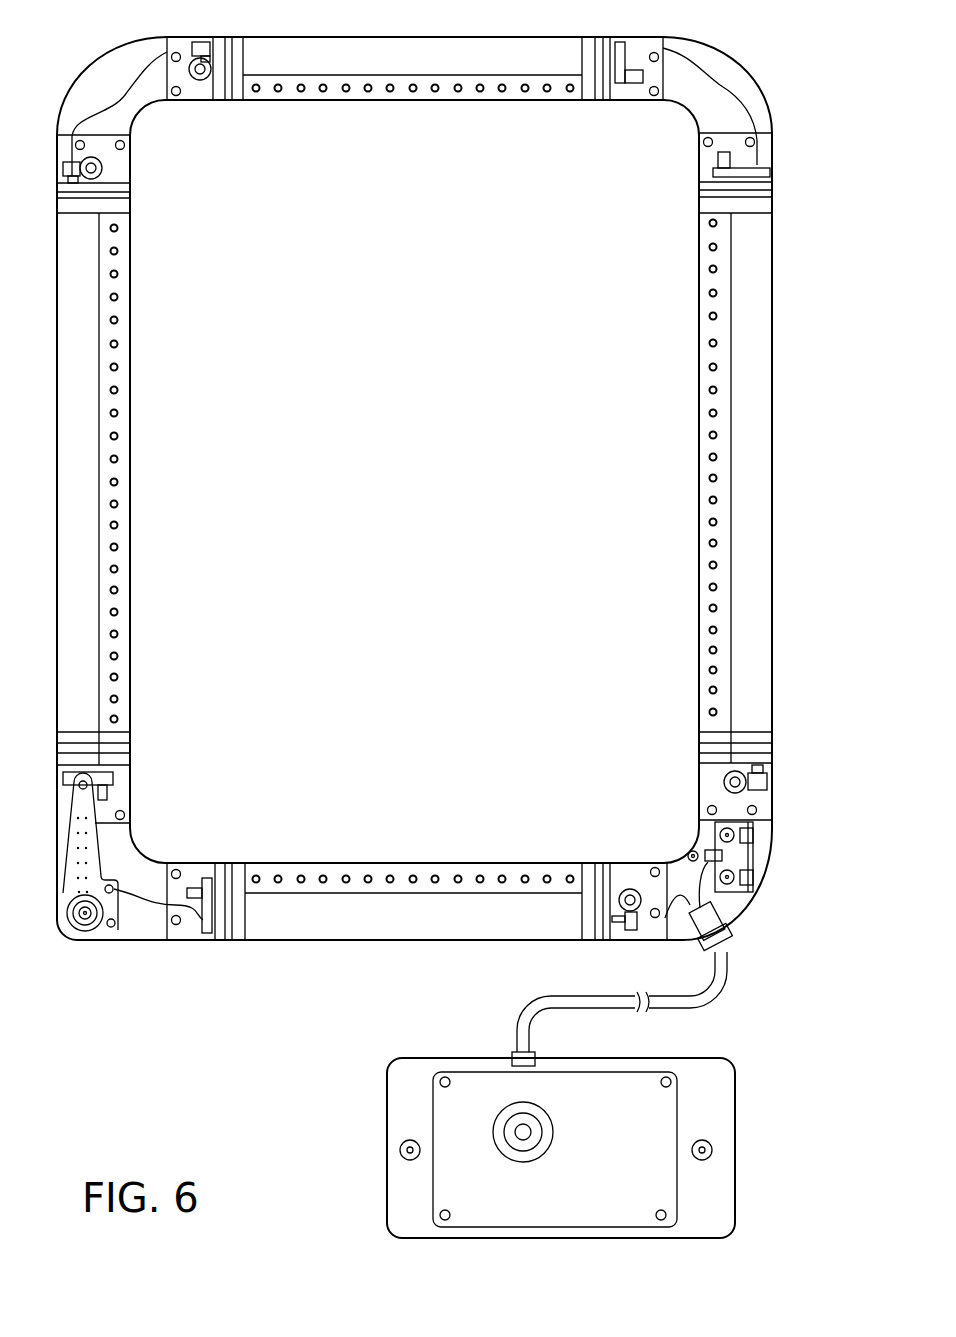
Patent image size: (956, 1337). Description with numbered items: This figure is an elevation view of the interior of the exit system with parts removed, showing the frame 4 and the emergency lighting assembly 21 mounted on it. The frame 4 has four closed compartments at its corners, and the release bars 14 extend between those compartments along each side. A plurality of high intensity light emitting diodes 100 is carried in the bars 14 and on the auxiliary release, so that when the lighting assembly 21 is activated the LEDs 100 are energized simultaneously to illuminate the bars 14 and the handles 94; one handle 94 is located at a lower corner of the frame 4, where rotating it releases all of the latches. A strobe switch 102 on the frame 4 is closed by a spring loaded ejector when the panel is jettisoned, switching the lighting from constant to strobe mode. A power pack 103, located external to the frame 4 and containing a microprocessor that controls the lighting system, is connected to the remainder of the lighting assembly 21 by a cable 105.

The frame 4 is at (57, 633).
The bars 14 is at (442, 85).
The emergency lighting assembly 21 is at (750, 913).
The handles 94 is at (75, 848).
The light emitting diodes 100 is at (323, 93).
The strobe switch 102 is at (752, 865).
The power pack 103 is at (407, 1117).
The cable 105 is at (705, 999).